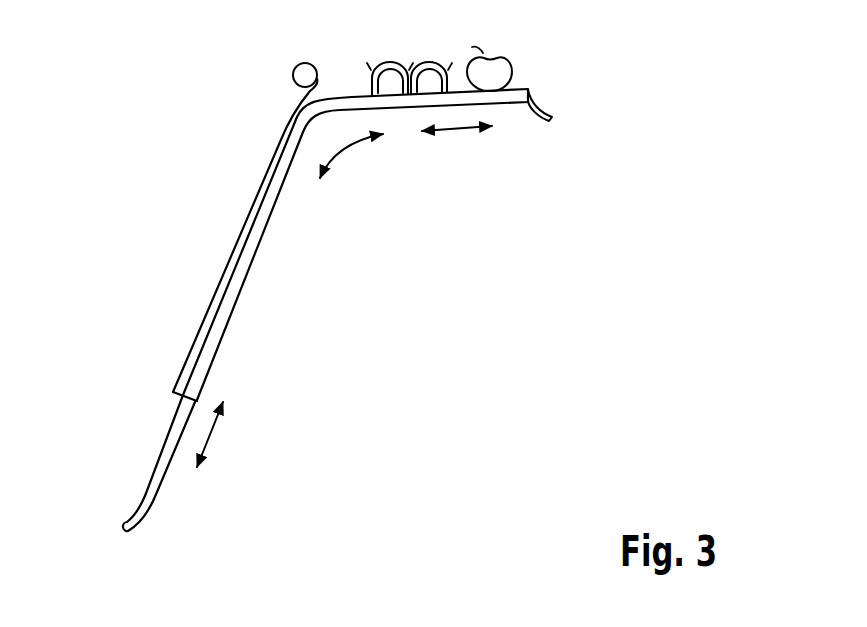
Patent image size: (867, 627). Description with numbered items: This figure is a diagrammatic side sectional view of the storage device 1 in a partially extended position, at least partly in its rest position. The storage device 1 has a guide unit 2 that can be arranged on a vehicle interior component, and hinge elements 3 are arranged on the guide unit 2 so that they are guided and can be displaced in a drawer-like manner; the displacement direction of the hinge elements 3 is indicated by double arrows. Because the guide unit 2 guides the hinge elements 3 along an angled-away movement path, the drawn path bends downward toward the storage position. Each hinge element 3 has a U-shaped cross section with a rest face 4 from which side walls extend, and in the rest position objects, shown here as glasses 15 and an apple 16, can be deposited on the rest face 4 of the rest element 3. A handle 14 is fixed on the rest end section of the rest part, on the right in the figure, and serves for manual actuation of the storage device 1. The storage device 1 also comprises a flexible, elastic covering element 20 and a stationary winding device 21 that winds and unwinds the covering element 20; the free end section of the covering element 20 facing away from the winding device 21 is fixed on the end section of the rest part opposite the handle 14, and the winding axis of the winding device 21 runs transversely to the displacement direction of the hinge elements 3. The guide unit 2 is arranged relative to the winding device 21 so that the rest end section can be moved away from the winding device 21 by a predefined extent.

The storage device 1 is at (244, 86).
The guide unit 2 is at (157, 456).
The hinge element 3 is at (253, 262).
The rest face 4 is at (352, 94).
The handle 14 is at (540, 103).
The glasses 15 is at (404, 62).
The apple 16 is at (499, 57).
The covering element 20 is at (249, 213).
The winding device 21 is at (303, 63).